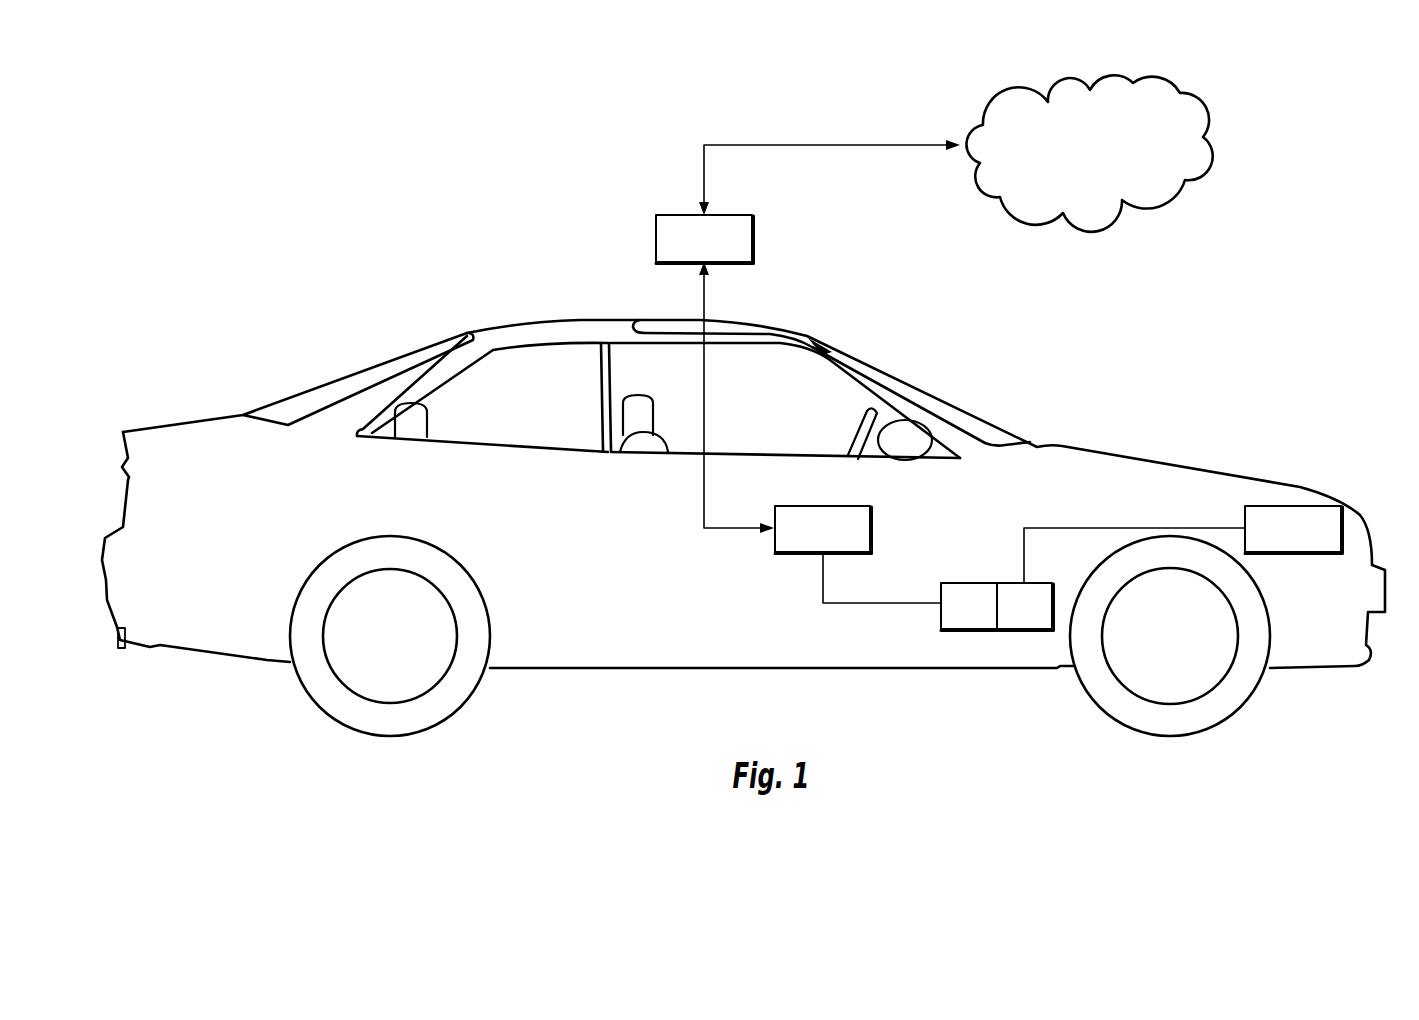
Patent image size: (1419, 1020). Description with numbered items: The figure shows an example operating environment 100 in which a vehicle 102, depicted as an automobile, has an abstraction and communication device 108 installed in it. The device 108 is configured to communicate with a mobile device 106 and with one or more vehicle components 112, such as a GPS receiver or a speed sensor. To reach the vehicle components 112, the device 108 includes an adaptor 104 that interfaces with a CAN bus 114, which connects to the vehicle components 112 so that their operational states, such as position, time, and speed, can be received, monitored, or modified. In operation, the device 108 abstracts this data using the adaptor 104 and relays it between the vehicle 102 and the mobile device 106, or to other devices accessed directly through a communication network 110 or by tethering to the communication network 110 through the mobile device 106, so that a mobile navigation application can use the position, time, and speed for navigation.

The operating environment 100 is at (366, 195).
The vehicle 102 is at (573, 318).
The adaptor 104 is at (953, 617).
The mobile device 106 is at (688, 250).
The abstraction and communication device 108 is at (807, 540).
The communication network 110 is at (1071, 163).
The vehicle components 112 is at (1277, 540).
The CAN bus 114 is at (1008, 617).